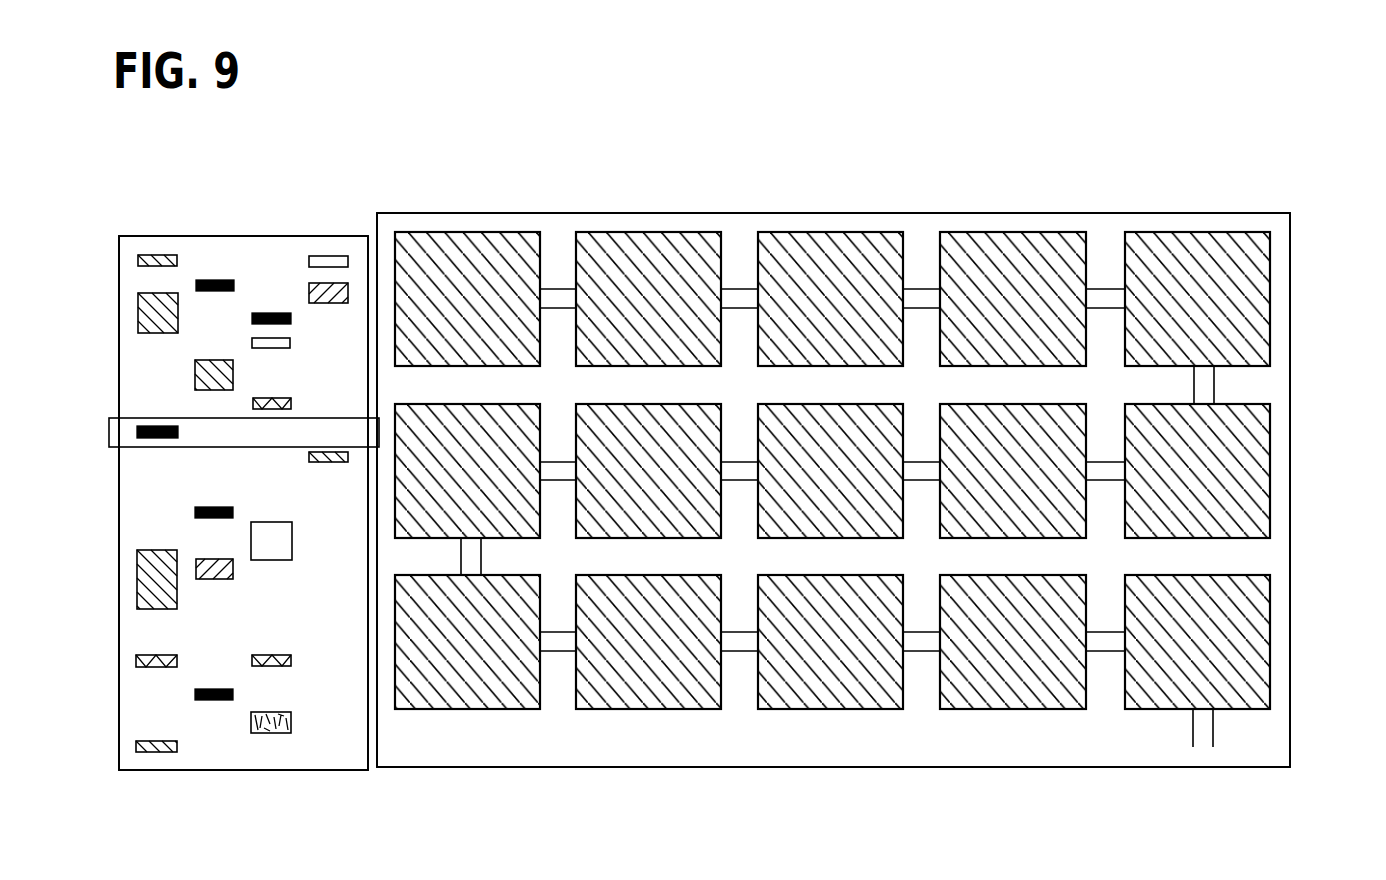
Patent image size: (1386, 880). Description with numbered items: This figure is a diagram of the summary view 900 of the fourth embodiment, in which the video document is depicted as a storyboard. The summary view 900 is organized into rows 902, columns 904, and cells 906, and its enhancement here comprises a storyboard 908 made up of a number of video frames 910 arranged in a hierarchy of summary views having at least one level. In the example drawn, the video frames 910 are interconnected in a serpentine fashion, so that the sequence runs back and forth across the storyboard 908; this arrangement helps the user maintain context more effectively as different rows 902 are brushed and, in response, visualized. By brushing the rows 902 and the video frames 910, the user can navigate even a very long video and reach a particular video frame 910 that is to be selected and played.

The summary view 900 is at (188, 212).
The rows 902 is at (116, 259).
The columns 904 is at (328, 236).
The cells 906 is at (137, 594).
The storyboard 908 is at (768, 213).
The video frames 910 is at (1272, 333).